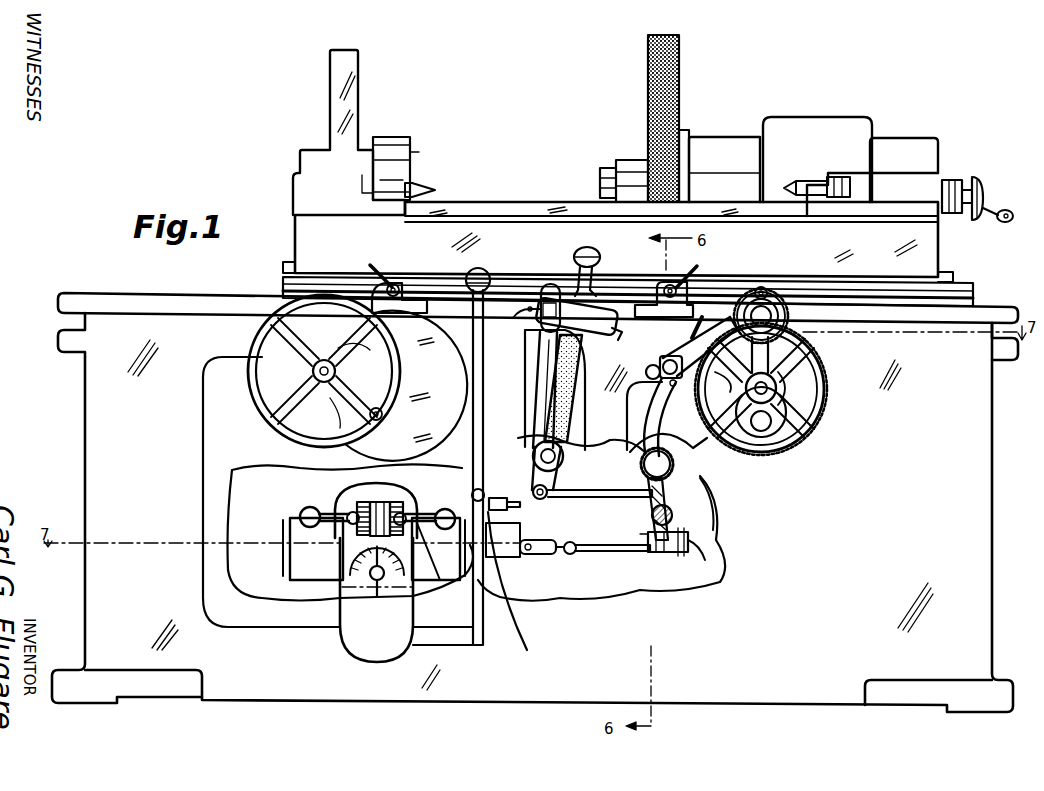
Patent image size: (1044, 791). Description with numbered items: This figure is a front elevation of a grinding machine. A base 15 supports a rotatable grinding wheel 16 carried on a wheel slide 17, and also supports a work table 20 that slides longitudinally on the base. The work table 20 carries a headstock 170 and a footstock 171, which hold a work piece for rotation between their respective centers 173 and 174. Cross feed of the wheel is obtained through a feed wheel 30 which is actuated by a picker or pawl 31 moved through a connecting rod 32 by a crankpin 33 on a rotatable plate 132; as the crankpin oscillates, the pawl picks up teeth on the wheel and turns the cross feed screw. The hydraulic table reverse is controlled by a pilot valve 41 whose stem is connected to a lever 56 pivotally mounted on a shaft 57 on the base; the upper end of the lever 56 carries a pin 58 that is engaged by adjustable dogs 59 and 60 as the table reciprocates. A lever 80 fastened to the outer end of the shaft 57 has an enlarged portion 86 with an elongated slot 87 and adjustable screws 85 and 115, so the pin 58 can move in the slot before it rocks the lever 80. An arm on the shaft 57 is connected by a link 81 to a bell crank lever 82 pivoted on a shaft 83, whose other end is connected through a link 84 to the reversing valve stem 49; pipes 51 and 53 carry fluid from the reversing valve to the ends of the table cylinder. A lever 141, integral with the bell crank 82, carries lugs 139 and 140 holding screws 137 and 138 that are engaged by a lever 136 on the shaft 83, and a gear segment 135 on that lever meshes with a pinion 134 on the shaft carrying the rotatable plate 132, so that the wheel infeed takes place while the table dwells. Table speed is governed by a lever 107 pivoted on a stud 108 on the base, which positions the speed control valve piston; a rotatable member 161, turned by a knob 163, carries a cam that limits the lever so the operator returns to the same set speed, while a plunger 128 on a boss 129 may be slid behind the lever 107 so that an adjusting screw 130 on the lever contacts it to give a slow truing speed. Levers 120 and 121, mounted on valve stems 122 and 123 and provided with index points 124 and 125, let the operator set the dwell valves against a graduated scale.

The base 15 is at (977, 387).
The grinding wheel 16 is at (660, 110).
The wheel slide 17 is at (770, 130).
The work table 20 is at (303, 241).
The feed wheel 30 is at (810, 444).
The pawl 31 is at (690, 350).
The connecting rod 32 is at (652, 422).
The crankpin 33 is at (646, 447).
The pilot valve 41 is at (300, 545).
The valve stem 49 is at (537, 556).
The pipe 51 is at (326, 470).
The pipe 53 is at (404, 497).
The lever 56 is at (547, 392).
The shaft 57 is at (564, 457).
The pin 58 is at (548, 285).
The adjustable dog 59 is at (415, 305).
The adjustable dog 60 is at (641, 294).
The lever 80 is at (570, 357).
The link 81 is at (592, 498).
The bell crank lever 82 is at (652, 506).
The shaft 83 is at (673, 514).
The link 84 is at (605, 553).
The adjustable screw 85 is at (617, 333).
The enlarged portion 86 is at (573, 290).
The elongated slot 87 is at (600, 283).
The lever 107 is at (478, 270).
The stud 108 is at (486, 642).
The adjustable screw 115 is at (516, 318).
The lever 120 is at (334, 516).
The lever 121 is at (527, 645).
The valve stem 122 is at (304, 511).
The valve stem 123 is at (446, 509).
The index point 124 is at (355, 528).
The index point 125 is at (418, 532).
The plunger 128 is at (494, 501).
The boss 129 is at (498, 566).
The adjusting screw 130 is at (481, 492).
The rotatable plate 132 is at (684, 447).
The pinion 134 is at (665, 474).
The gear segment 135 is at (690, 476).
The lever 136 is at (702, 500).
The screw 137 is at (644, 555).
The screw 138 is at (693, 547).
The lug 139 is at (652, 555).
The lug 140 is at (681, 547).
The lever 141 is at (718, 563).
The rotatable member 161 is at (366, 585).
The knob 163 is at (379, 592).
The headstock 170 is at (355, 158).
The footstock 171 is at (876, 190).
The center 173 is at (431, 187).
The center 174 is at (798, 172).